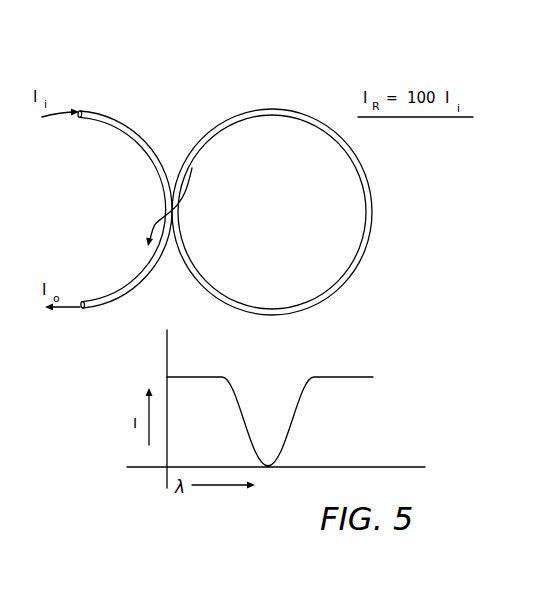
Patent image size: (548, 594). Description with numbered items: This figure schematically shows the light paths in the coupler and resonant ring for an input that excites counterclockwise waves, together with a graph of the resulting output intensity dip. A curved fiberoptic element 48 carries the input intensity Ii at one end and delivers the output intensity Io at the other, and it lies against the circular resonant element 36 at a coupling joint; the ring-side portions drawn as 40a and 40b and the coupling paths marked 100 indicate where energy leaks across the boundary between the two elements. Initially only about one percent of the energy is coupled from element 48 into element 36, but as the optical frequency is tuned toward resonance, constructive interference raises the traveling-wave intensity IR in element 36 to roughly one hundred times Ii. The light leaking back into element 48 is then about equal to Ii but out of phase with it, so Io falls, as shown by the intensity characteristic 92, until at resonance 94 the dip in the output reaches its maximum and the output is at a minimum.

The resonant element 36 is at (371, 204).
The input optical fiber waveguide 40a is at (98, 114).
The ring optical fiber waveguide 40b is at (216, 127).
The fiberoptic element 48 is at (135, 287).
The light path / propagation direction 100 is at (128, 146).
The intensity characteristic 92 is at (218, 402).
The resonance 94 is at (268, 468).